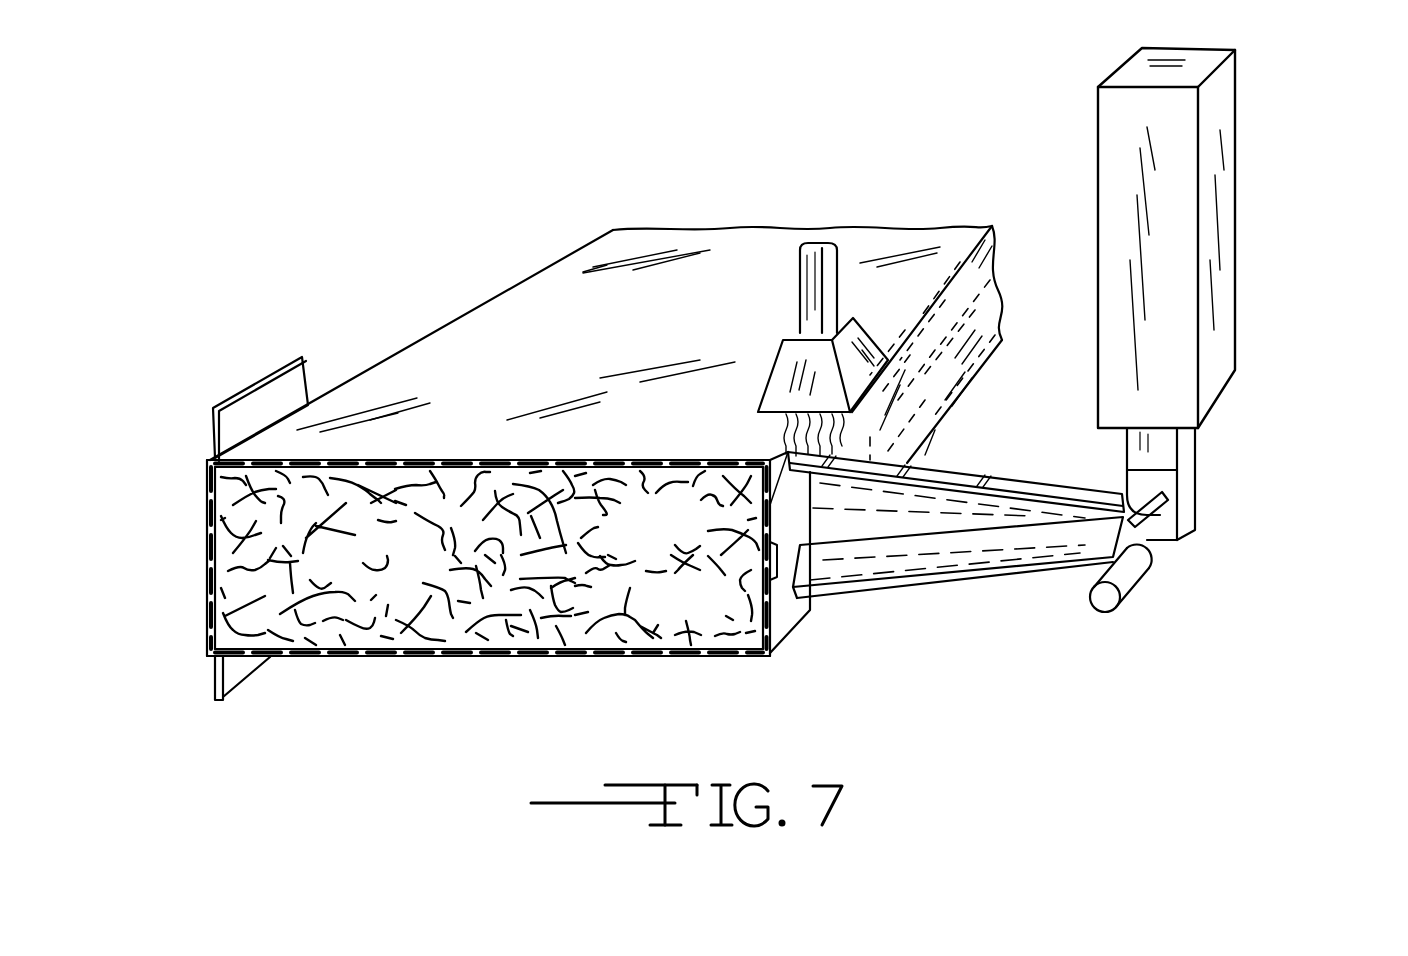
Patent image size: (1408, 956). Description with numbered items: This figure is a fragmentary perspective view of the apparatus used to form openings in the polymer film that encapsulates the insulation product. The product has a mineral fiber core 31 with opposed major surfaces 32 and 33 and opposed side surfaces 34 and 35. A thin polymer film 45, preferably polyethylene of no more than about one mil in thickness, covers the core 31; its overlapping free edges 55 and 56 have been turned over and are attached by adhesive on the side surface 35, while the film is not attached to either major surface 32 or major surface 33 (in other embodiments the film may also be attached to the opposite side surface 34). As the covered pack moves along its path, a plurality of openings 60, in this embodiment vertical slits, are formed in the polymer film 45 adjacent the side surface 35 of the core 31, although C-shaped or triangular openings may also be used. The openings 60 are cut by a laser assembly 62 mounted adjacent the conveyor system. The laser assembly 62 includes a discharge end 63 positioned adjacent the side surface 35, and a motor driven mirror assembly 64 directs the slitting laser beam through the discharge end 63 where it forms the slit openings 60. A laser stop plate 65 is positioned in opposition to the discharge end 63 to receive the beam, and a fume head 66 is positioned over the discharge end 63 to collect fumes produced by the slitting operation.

The mineral fiber core 31 is at (412, 582).
The major surface 32 is at (442, 462).
The major surface 33 is at (417, 660).
The side surface 34 is at (205, 587).
The side surface 35 is at (780, 627).
The polymer film 45 is at (698, 325).
The free edge 55 is at (760, 509).
The free edge 56 is at (760, 588).
The openings 60 is at (948, 310).
The laser assembly 62 is at (1233, 207).
The discharge end 63 is at (908, 588).
The motor driven mirror assembly 64 is at (1140, 592).
The laser stop plate 65 is at (240, 380).
The fume head 66 is at (777, 355).